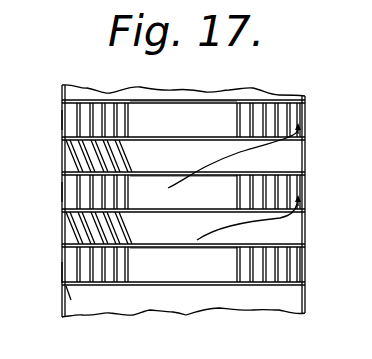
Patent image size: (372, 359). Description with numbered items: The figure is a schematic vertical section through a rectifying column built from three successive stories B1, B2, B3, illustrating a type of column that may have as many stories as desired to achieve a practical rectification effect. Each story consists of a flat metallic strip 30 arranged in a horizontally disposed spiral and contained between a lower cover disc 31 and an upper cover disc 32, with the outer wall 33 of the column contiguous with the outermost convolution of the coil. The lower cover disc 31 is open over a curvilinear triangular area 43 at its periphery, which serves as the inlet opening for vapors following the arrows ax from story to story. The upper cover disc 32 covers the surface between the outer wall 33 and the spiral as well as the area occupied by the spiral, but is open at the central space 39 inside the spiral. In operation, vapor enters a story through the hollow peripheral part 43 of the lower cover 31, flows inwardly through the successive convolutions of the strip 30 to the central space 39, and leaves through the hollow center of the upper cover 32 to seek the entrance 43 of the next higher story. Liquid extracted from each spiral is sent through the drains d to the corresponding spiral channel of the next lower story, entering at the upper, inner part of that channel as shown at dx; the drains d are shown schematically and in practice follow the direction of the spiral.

The flat metallic strip 30 is at (74, 106).
The lower cover disc 31 is at (196, 140).
The upper cover disc 32 is at (273, 99).
The outer wall 33 is at (62, 302).
The open central space 39 is at (183, 188).
The curvilinear triangular area 43 is at (301, 141).
The vapor flow arrows ax is at (242, 153).
The drains d is at (63, 152).
The drain entry point dx is at (86, 176).
The first story B1 is at (53, 273).
The second story B2 is at (55, 191).
The third story B3 is at (55, 120).